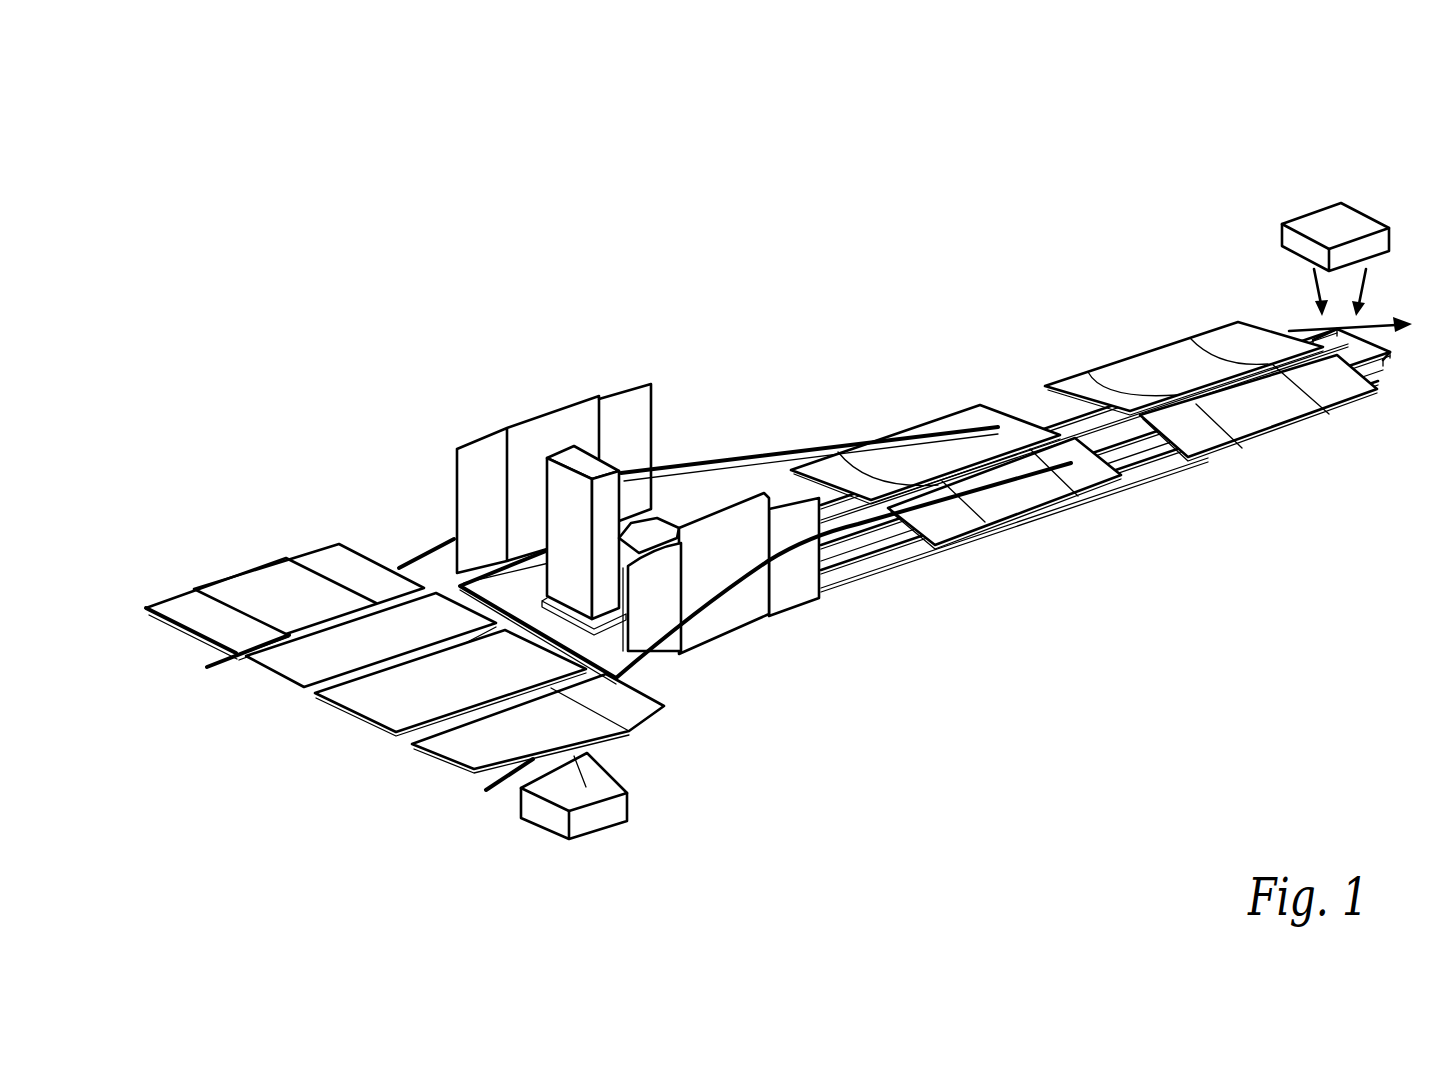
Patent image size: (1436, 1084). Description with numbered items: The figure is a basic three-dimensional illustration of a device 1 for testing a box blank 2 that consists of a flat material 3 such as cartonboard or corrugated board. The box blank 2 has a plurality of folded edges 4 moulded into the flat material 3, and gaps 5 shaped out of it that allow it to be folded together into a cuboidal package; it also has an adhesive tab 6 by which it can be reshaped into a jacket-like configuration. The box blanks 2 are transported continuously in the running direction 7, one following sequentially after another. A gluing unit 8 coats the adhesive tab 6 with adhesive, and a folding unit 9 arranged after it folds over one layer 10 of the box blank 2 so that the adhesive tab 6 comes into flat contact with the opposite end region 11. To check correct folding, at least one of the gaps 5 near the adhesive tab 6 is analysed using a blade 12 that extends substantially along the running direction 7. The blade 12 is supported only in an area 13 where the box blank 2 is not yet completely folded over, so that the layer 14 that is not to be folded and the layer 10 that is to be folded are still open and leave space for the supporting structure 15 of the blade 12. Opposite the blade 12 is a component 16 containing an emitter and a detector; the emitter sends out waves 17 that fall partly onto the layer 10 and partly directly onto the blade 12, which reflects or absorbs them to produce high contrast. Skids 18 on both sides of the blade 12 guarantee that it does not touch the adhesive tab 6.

The device 1 is at (1336, 145).
The box blank 2 is at (184, 641).
The flat material 3 is at (391, 684).
The folded edges 4 is at (398, 650).
The gaps 5 is at (391, 737).
The adhesive tab 6 is at (548, 745).
The running direction 7 is at (1354, 333).
The gluing unit 8 is at (566, 748).
The folding unit 9 is at (676, 608).
The layer 10 is at (571, 391).
The end region 11 is at (246, 569).
The blade 12 is at (853, 534).
The area 13 is at (627, 443).
The layer 14 is at (899, 533).
The supporting structure 15 is at (623, 513).
The component 16 is at (1303, 216).
The waves 17 is at (1309, 286).
The skids 18 is at (1372, 351).